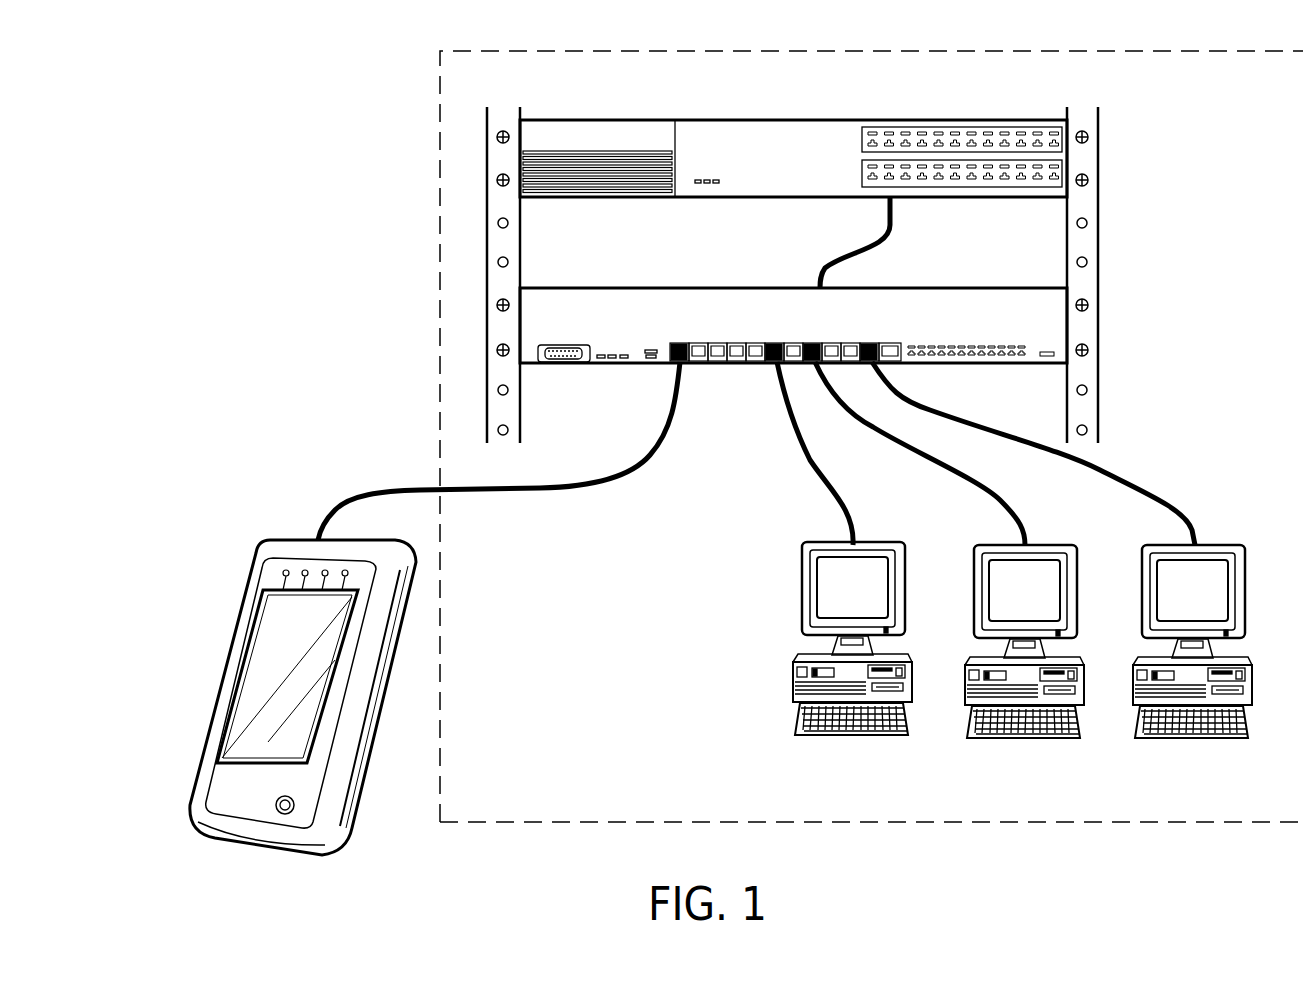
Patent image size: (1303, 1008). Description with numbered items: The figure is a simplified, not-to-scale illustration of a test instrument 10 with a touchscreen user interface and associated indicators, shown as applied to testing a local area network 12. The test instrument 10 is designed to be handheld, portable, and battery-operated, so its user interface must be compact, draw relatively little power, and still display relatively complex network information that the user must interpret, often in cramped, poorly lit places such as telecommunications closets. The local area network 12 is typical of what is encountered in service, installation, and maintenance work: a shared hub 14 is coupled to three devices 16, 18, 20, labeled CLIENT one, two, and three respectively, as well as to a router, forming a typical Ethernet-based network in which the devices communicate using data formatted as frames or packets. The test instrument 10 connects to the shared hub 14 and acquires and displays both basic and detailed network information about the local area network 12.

The test instrument 10 is at (278, 537).
The local area network 12 is at (621, 613).
The shared hub 14 is at (928, 287).
The device 16 is at (875, 542).
The device 18 is at (1043, 545).
The device 20 is at (953, 117).